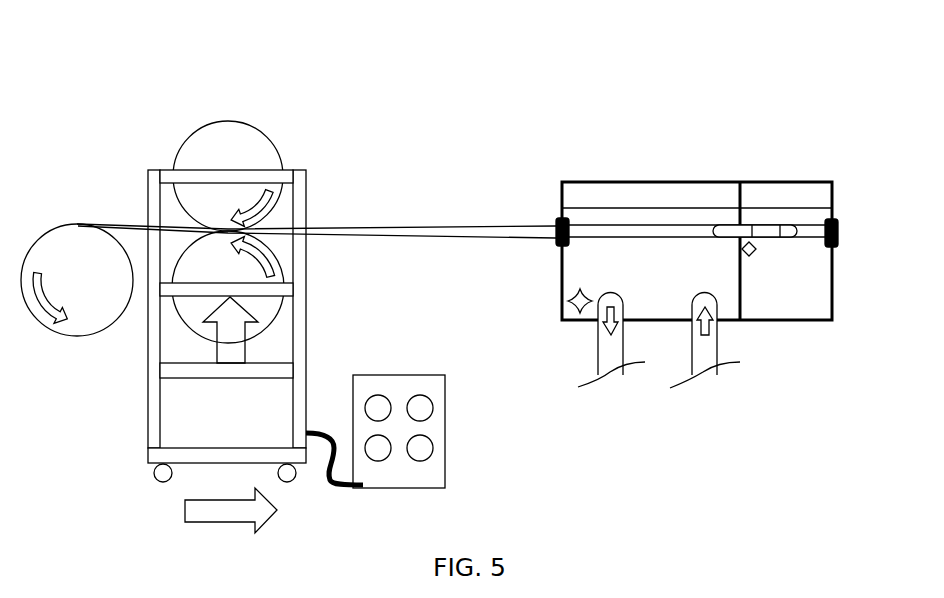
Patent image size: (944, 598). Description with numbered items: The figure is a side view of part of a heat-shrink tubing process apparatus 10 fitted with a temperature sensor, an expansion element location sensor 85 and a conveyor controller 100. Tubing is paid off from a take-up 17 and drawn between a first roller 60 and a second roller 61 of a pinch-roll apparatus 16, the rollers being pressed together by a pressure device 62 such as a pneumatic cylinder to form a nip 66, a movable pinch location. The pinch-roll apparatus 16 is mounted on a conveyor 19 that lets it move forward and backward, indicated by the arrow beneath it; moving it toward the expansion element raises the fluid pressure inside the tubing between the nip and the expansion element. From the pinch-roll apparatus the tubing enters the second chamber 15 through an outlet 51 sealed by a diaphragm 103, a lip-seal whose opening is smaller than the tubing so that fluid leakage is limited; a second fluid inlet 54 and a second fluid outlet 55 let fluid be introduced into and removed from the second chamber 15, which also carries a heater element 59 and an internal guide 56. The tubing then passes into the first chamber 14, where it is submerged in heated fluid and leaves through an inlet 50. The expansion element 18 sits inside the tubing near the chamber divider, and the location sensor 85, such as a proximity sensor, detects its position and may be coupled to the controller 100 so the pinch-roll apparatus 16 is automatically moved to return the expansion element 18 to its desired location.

The heat-shrink tubing process apparatus 10 is at (96, 80).
The first chamber 14 is at (817, 193).
The second chamber 15 is at (607, 190).
The pinch-roll apparatus 16 is at (200, 147).
The take-up 17 is at (58, 257).
The expansion element 18 is at (747, 223).
The conveyor 19 is at (184, 298).
The inlet 50 is at (836, 247).
The outlet 51 is at (555, 233).
The second fluid inlet 54 is at (707, 360).
The second fluid outlet 55 is at (615, 358).
The inner guide 56 is at (670, 210).
The heater 59 is at (580, 313).
The first roller 60 is at (214, 132).
The second roller 61 is at (188, 312).
The pressure device 62 is at (233, 357).
The nip 66 is at (222, 229).
The expansion element location sensor 85 is at (755, 252).
The controller 100 is at (430, 423).
The diaphragm 103 is at (562, 223).